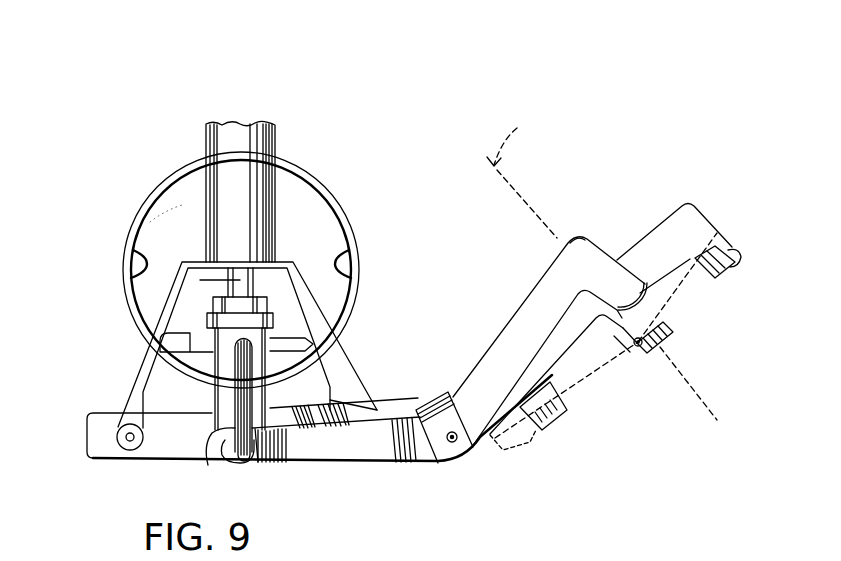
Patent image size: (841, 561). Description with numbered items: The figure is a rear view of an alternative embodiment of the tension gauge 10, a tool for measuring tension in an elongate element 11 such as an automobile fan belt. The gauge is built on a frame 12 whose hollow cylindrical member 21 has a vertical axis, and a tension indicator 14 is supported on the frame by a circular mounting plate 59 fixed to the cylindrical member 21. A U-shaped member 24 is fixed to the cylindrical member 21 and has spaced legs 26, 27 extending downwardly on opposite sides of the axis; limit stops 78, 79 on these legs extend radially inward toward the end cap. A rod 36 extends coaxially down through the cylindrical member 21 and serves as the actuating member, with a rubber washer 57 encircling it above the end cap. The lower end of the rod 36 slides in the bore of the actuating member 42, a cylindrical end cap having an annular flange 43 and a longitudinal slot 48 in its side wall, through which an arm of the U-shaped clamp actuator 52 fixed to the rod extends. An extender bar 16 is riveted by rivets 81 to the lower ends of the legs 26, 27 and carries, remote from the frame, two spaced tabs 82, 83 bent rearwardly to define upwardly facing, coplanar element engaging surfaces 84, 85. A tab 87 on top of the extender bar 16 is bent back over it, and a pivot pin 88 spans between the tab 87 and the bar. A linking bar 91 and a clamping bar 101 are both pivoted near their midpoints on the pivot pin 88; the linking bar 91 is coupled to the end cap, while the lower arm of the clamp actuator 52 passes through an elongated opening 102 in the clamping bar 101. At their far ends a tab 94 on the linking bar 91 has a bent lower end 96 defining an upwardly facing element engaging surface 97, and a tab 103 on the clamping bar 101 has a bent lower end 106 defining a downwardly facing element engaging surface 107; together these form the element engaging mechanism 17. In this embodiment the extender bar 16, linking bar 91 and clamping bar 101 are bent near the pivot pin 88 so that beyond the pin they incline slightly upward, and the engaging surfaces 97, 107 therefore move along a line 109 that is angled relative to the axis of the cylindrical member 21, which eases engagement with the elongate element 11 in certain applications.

The tension gauge 10 is at (125, 103).
The hollow cylindrical member 21 is at (232, 137).
The frame 12 is at (279, 136).
The tension indicator 14 is at (321, 186).
The circular mounting plate 59 is at (150, 222).
The U-shaped member 24 is at (181, 262).
The leg 26 is at (358, 390).
The rod 36 is at (200, 280).
The rubber washer 57 is at (263, 302).
The extender bar 16 is at (195, 447).
The annular flange 43 is at (215, 320).
The limit stop 79 is at (150, 328).
The limit stop 78 is at (300, 340).
The slot 48 is at (240, 353).
The elongated opening 102 is at (225, 465).
The actuating member 42 is at (193, 442).
The U-shaped clamp actuator 52 is at (272, 430).
The leg 27 is at (143, 373).
The rivets 81 is at (131, 450).
The clamping bar 101 is at (368, 450).
The linking bar 91 is at (318, 422).
The tab 87 is at (444, 396).
The pivot pin 88 is at (455, 443).
The element engaging mechanism 17 is at (527, 244).
The tab 103 is at (588, 255).
The lower end 106 is at (643, 277).
The elongate element 11 is at (740, 243).
The element engaging surface 107 is at (670, 313).
The element engaging surface 85 is at (740, 256).
The tab 83 is at (725, 276).
The lower end 96 is at (662, 336).
The element engaging surface 97 is at (641, 348).
The tab 94 is at (623, 337).
The tab 82 is at (550, 418).
The element engaging surface 84 is at (528, 427).
The line 109 is at (522, 178).